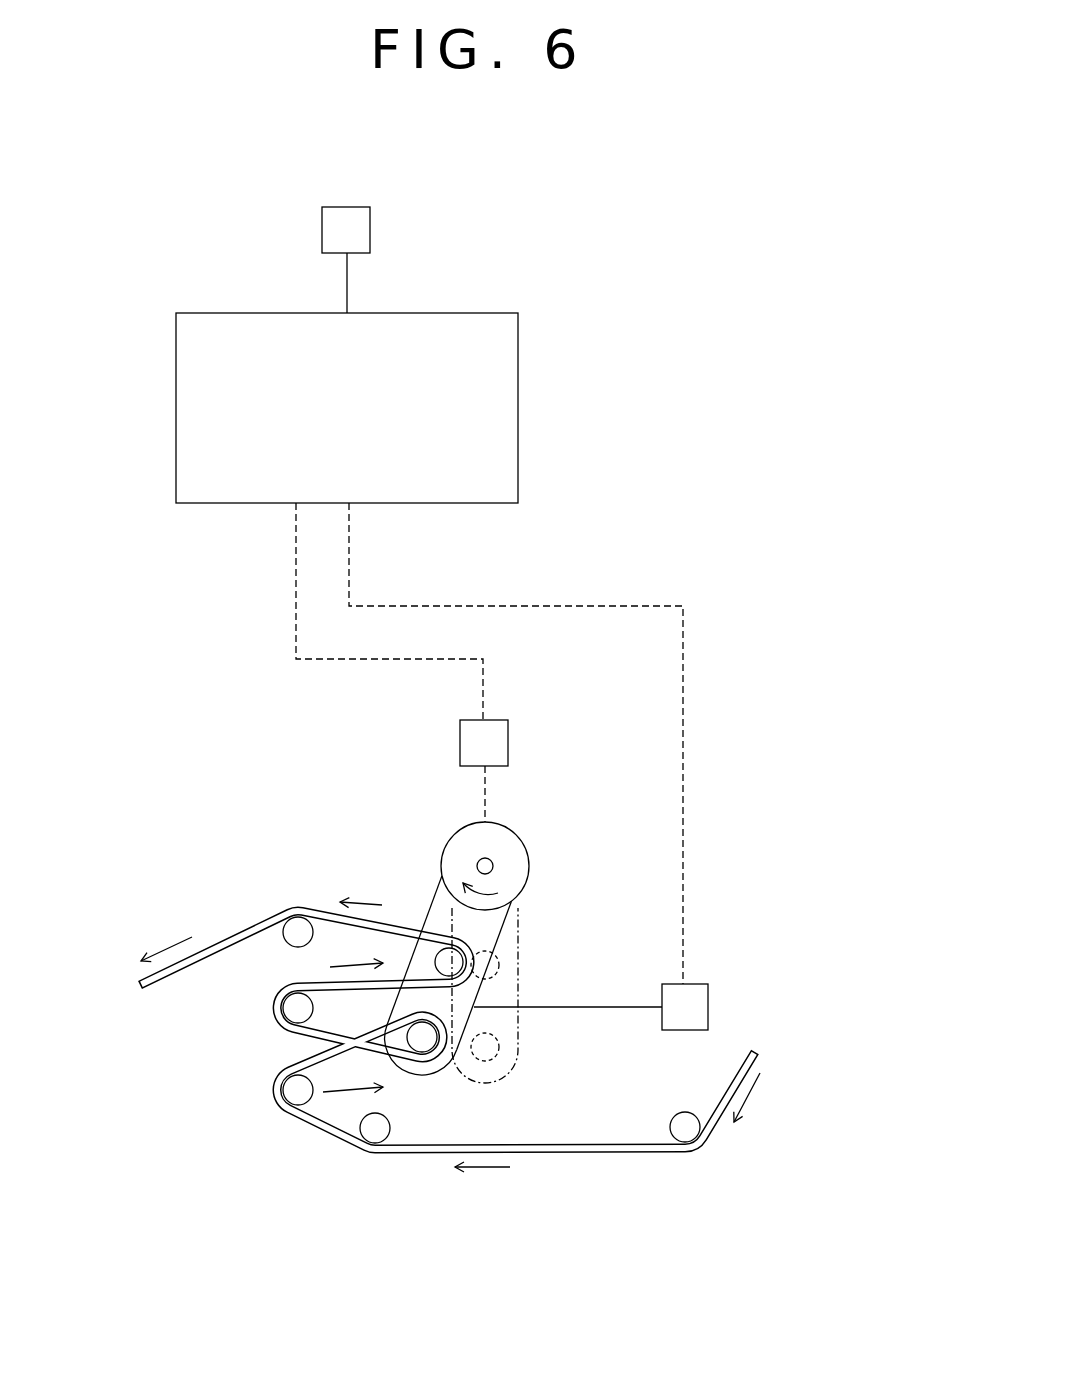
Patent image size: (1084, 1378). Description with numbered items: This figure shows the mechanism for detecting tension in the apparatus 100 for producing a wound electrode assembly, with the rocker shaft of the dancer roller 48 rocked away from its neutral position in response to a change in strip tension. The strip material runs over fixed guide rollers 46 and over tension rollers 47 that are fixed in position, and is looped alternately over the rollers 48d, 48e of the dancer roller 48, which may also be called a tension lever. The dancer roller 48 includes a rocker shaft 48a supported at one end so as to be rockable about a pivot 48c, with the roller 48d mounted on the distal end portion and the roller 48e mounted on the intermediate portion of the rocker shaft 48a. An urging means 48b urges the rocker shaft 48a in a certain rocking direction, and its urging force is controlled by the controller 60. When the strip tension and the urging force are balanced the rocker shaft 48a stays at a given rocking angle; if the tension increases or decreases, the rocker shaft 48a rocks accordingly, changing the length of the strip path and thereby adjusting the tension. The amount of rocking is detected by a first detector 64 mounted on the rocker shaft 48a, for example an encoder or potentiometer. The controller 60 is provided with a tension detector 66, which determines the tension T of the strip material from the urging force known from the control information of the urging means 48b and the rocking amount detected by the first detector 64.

The apparatus for producing the wound electrode assembly 100 is at (787, 421).
The controller 60 is at (518, 393).
The tension detector 66 is at (357, 204).
The first detector 64 is at (508, 728).
The dancer roller 48 is at (493, 948).
The rocker shaft 48a is at (477, 997).
The urging means 48b is at (693, 984).
The pivot 48c is at (478, 863).
The roller 48d is at (437, 1055).
The roller 48e is at (460, 953).
The tension rollers 47 is at (291, 921).
The guide rollers 46 is at (376, 1152).